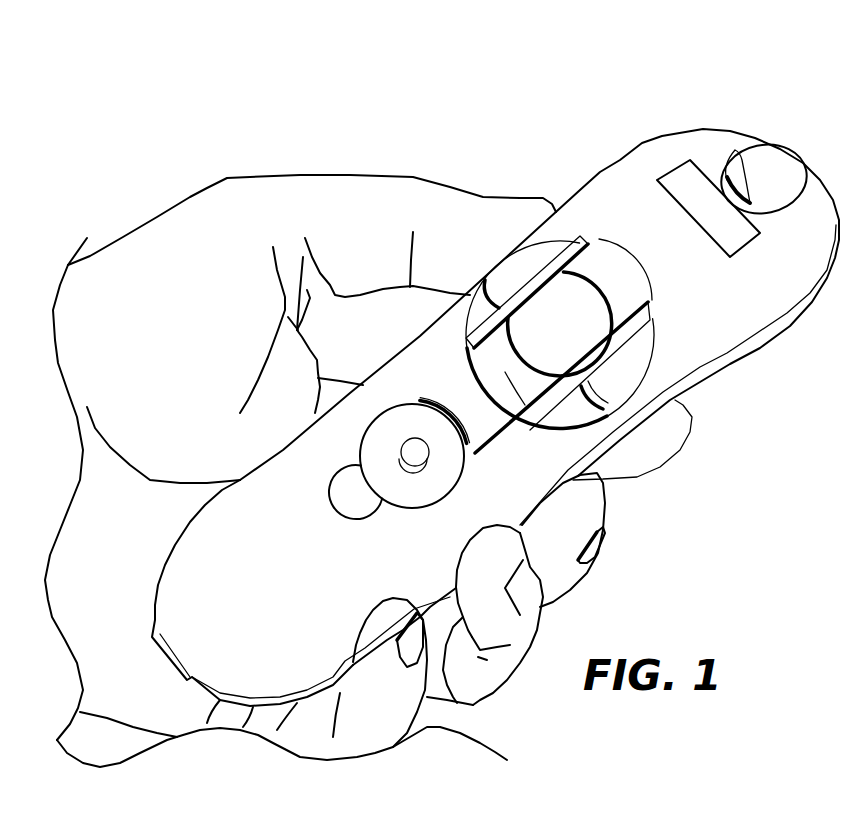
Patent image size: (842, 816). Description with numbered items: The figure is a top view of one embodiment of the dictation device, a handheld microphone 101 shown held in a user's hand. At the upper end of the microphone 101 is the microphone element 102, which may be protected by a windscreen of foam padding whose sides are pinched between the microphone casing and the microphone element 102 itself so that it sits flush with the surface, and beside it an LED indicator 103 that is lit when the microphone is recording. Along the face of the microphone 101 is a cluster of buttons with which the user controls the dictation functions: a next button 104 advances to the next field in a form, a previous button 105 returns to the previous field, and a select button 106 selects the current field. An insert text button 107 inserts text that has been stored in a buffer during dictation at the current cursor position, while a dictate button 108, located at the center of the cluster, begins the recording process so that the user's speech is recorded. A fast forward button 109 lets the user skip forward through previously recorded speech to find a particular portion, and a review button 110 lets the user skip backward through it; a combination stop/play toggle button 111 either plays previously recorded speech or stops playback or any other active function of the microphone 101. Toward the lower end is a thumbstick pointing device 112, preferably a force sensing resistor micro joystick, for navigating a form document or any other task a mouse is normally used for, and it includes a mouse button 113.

The microphone 101 is at (620, 160).
The microphone element 102 is at (754, 186).
The LED indicator 103 is at (733, 150).
The next button 104 is at (620, 363).
The previous button 105 is at (537, 253).
The select button 106 is at (475, 405).
The insert text button 107 is at (613, 280).
The dictate button 108 is at (575, 339).
The fast forward button 109 is at (568, 403).
The review button 110 is at (480, 315).
The stop/play toggle button 111 is at (505, 372).
The thumbstick pointing device 112 is at (410, 452).
The mouse button 113 is at (352, 493).